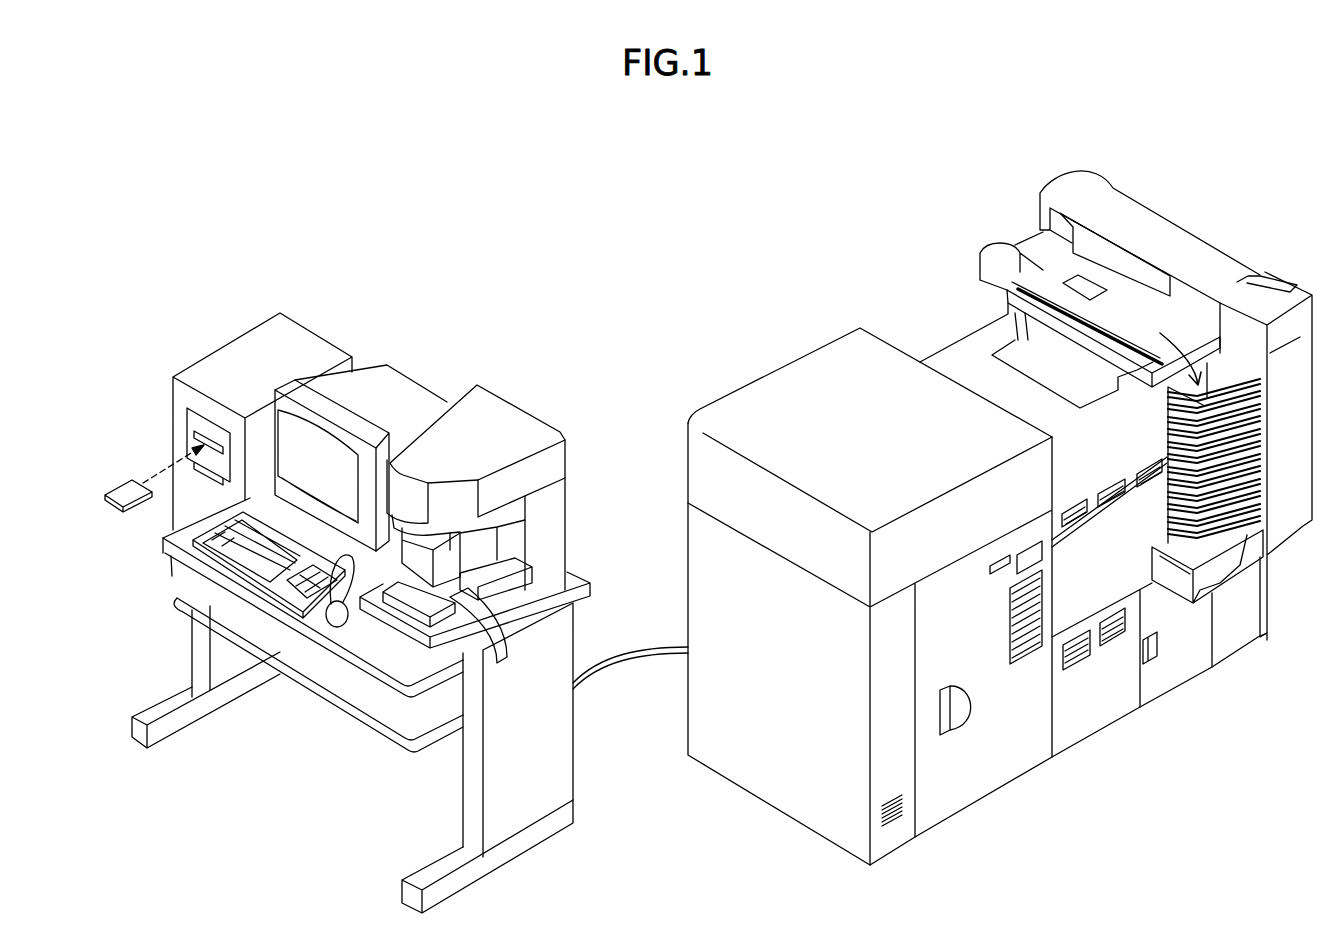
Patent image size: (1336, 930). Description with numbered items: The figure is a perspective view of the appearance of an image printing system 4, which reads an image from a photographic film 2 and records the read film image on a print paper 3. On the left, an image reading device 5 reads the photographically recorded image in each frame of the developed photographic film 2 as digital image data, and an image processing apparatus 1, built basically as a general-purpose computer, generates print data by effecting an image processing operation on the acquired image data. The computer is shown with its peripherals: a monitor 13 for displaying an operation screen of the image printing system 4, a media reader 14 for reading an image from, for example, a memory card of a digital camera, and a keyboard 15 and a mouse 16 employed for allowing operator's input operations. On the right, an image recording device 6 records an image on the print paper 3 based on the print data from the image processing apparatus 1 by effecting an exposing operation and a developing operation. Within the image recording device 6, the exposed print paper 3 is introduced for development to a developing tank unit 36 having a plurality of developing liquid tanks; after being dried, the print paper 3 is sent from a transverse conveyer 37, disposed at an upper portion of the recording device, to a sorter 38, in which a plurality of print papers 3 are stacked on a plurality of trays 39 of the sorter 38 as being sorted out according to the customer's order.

The image processing apparatus 1 is at (233, 358).
The photographic film 2 is at (503, 658).
The print paper 3 is at (1095, 287).
The image printing system 4 is at (608, 266).
The image reading device 5 is at (497, 418).
The image recording device 6 is at (797, 314).
The monitor 13 is at (384, 382).
The media reader 14 is at (190, 431).
The keyboard 15 is at (215, 560).
The mouse 16 is at (343, 633).
The developing tank unit 36 is at (1124, 693).
The transverse conveyer 37 is at (1000, 245).
The sorter 38 is at (1282, 266).
The trays 39 is at (1173, 447).